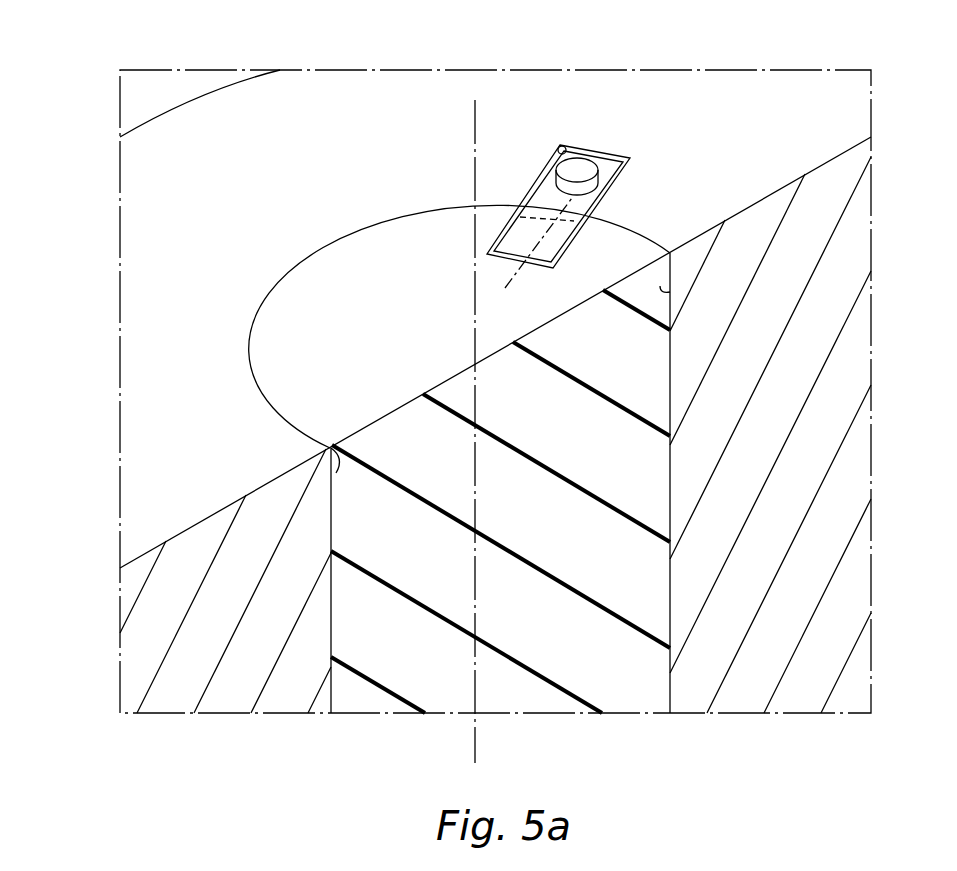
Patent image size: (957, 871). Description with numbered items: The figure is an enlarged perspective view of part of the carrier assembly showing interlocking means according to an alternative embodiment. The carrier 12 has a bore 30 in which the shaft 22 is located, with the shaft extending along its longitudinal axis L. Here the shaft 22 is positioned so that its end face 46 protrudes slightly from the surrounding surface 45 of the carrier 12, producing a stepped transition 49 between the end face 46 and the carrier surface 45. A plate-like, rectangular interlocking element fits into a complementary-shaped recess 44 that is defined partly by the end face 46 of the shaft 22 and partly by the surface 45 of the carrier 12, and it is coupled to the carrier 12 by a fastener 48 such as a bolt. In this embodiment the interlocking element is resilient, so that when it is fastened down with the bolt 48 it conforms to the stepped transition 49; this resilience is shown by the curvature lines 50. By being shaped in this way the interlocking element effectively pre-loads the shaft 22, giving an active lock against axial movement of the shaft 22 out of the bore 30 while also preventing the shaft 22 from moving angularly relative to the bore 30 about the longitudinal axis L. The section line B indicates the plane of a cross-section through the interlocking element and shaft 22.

The carrier 12 is at (150, 637).
The shaft 22 is at (392, 670).
The bore 30 is at (670, 686).
The recess 44 is at (559, 146).
The surface of the carrier 45 is at (368, 187).
The end face of the shaft 46 is at (333, 288).
The fastener 48 is at (560, 168).
The stepped transition 49 is at (330, 449).
The curvature lines 50 is at (563, 222).
The longitudinal axis L is at (473, 118).
The section line B- B is at (533, 193).